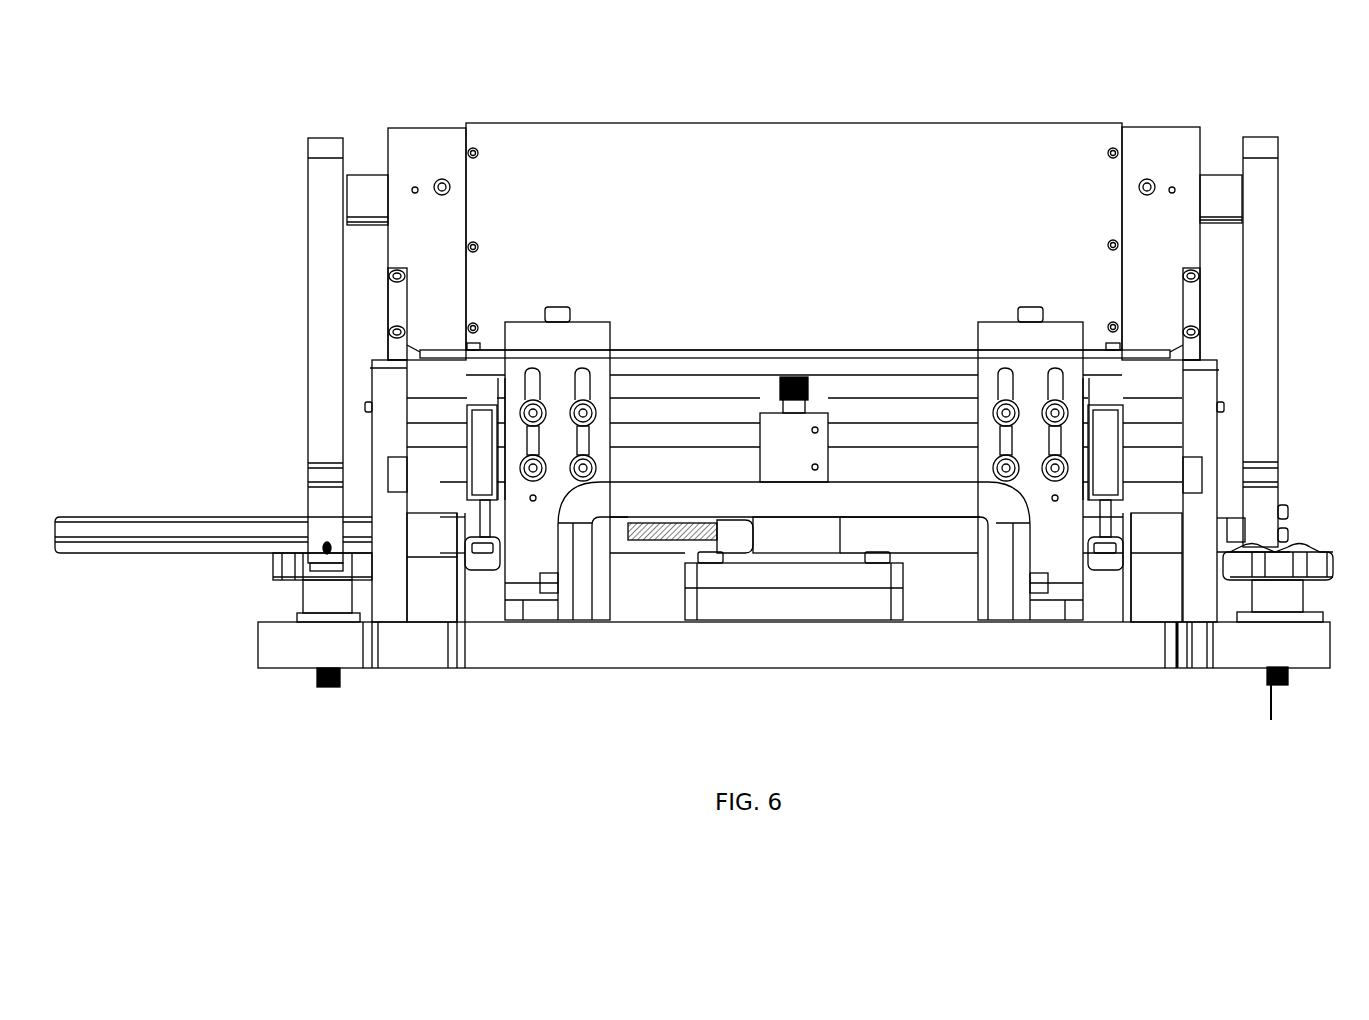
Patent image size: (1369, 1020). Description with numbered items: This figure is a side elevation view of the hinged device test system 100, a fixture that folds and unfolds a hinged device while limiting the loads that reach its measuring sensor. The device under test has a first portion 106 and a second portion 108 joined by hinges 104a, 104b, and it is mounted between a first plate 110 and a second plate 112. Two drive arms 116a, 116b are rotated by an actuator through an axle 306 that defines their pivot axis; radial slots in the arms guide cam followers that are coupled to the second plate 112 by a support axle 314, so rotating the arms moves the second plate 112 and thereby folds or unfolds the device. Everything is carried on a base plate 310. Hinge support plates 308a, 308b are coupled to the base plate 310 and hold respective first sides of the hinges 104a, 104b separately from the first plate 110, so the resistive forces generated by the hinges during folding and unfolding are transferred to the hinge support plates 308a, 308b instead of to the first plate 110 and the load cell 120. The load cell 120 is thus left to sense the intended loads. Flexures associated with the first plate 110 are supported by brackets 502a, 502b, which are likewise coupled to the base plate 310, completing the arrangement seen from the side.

The hinged device test system 100 is at (170, 95).
The hinge 104a is at (400, 313).
The hinge 104b is at (1215, 330).
The first portion 106 is at (765, 347).
The second portion 108 is at (612, 157).
The first plate 110 is at (887, 363).
The second plate 112 is at (455, 140).
The drive arm 116a is at (313, 175).
The drive arm 116b is at (1272, 173).
The load cell 120 is at (817, 550).
The axle 306 is at (103, 517).
The hinge support plate 308a is at (375, 430).
The hinge support plate 308b is at (1208, 395).
The base plate 310 is at (257, 622).
The support axle 314 is at (340, 164).
The bracket 502a is at (582, 356).
The bracket 502b is at (1058, 356).